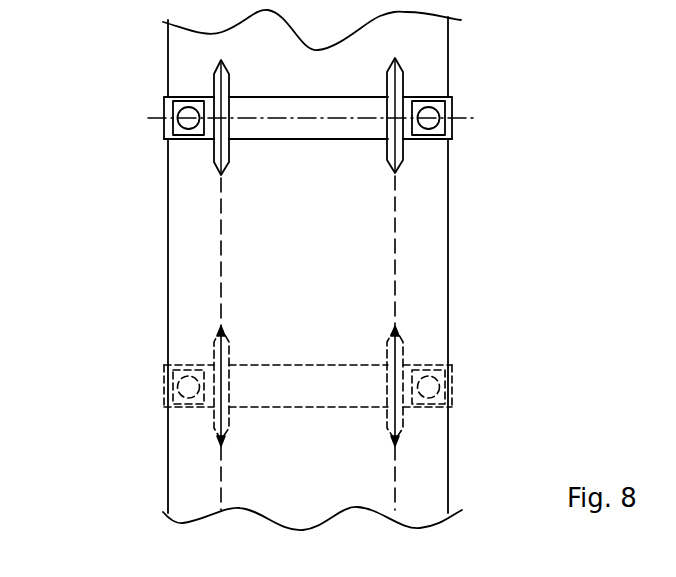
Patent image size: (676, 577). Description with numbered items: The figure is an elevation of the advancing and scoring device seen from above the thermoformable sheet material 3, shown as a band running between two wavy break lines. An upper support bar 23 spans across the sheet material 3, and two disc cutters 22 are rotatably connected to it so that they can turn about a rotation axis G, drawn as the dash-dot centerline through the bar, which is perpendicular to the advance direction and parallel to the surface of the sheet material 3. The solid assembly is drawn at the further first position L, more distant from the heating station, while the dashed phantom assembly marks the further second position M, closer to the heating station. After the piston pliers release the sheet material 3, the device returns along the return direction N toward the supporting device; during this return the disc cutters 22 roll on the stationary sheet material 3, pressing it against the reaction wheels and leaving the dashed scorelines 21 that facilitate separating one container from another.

The thermoformable sheet material 3 is at (182, 264).
The scorelines 21 is at (218, 227).
The disc cutters 22 is at (214, 82).
The upper support bar 23 is at (300, 126).
The rotation axis G is at (152, 120).
The further first position L is at (480, 112).
The return direction N is at (465, 268).
The further second position M is at (486, 388).